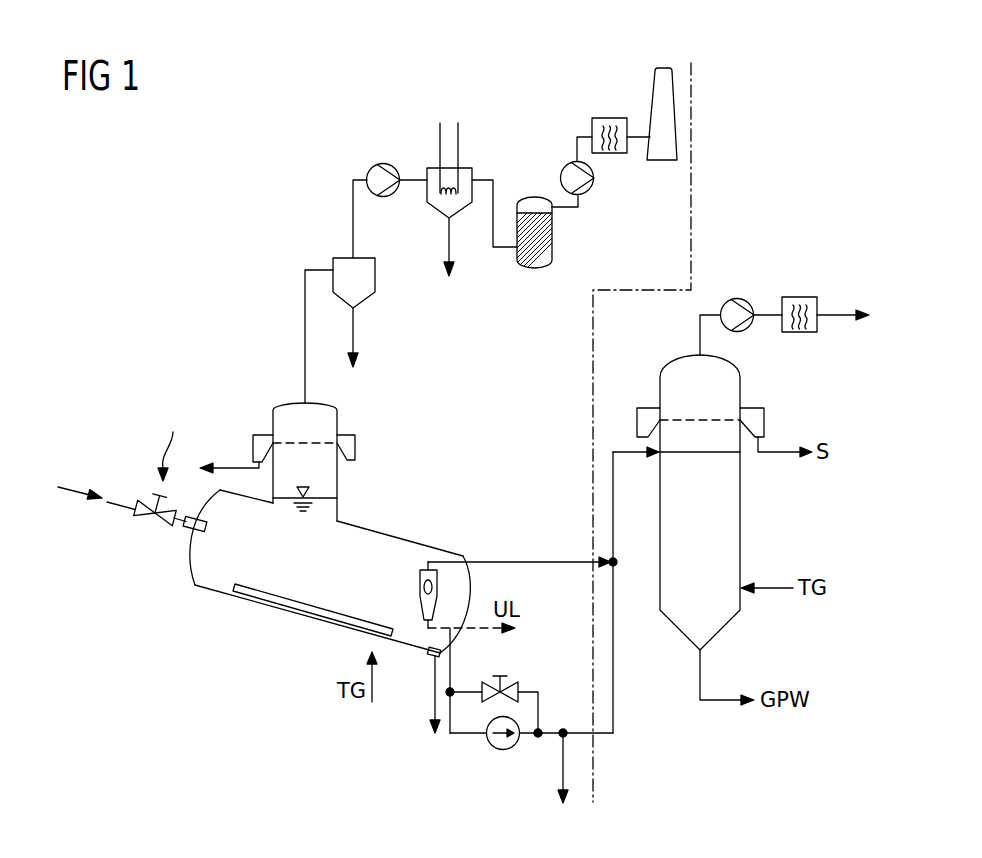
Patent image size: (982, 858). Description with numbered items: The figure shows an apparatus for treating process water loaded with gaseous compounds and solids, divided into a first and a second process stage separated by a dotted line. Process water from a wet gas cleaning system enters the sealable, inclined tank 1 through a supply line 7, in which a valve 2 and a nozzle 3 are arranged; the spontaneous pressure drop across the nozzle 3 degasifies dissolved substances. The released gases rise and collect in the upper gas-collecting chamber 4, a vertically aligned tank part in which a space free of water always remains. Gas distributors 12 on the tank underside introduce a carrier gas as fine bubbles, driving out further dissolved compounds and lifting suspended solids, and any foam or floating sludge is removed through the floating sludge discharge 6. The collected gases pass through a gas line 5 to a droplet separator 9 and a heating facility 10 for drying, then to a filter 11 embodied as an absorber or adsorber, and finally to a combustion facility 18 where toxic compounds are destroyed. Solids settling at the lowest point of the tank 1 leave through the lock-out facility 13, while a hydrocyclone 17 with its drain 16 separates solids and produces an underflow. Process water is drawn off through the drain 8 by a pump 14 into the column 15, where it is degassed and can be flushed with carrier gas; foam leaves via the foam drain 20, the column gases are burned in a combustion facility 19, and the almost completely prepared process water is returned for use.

The tank 1 is at (218, 572).
The valve 2 is at (169, 441).
The nozzle 3 is at (188, 530).
The gas-collecting chamber 4 is at (339, 489).
The gas line 5 is at (302, 330).
The floating sludge discharge 6 is at (263, 436).
The supply line 7 is at (120, 503).
The drain 8 is at (455, 667).
The droplet separator 9 is at (376, 279).
The heating facility 10 is at (433, 167).
The filter 11 is at (532, 263).
The gas distributor 12 is at (302, 612).
The discharge facility 13 is at (428, 653).
The pump 14 is at (503, 750).
The column 15 is at (732, 537).
The drain 16 is at (527, 558).
The hydrocyclone 17 is at (418, 580).
The combustion facility 18 is at (611, 117).
The combustion facility 19 is at (800, 297).
The foam drain 20 is at (766, 418).